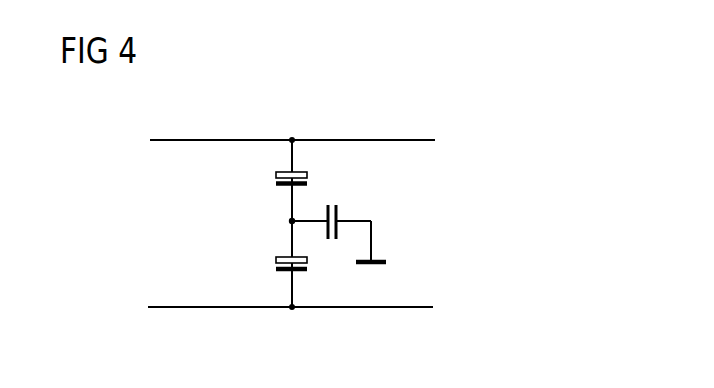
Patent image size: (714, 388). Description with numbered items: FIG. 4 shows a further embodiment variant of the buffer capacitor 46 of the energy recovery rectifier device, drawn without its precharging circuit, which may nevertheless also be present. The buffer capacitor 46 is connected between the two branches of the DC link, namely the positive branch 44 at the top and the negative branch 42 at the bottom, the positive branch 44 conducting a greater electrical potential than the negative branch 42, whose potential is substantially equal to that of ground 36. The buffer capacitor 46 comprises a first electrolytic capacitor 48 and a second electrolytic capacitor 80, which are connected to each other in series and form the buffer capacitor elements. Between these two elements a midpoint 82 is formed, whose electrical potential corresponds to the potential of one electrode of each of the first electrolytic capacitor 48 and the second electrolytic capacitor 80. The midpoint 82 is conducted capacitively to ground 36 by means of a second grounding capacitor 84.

The positive branch 44 is at (173, 140).
The negative branch 42 is at (172, 306).
The buffer capacitor 46 is at (178, 208).
The first electrolytic capacitor 48 is at (326, 175).
The second electrolytic capacitor 80 is at (298, 273).
The midpoint 82 is at (291, 221).
The second grounding capacitor 84 is at (362, 208).
The ground 36 is at (371, 266).